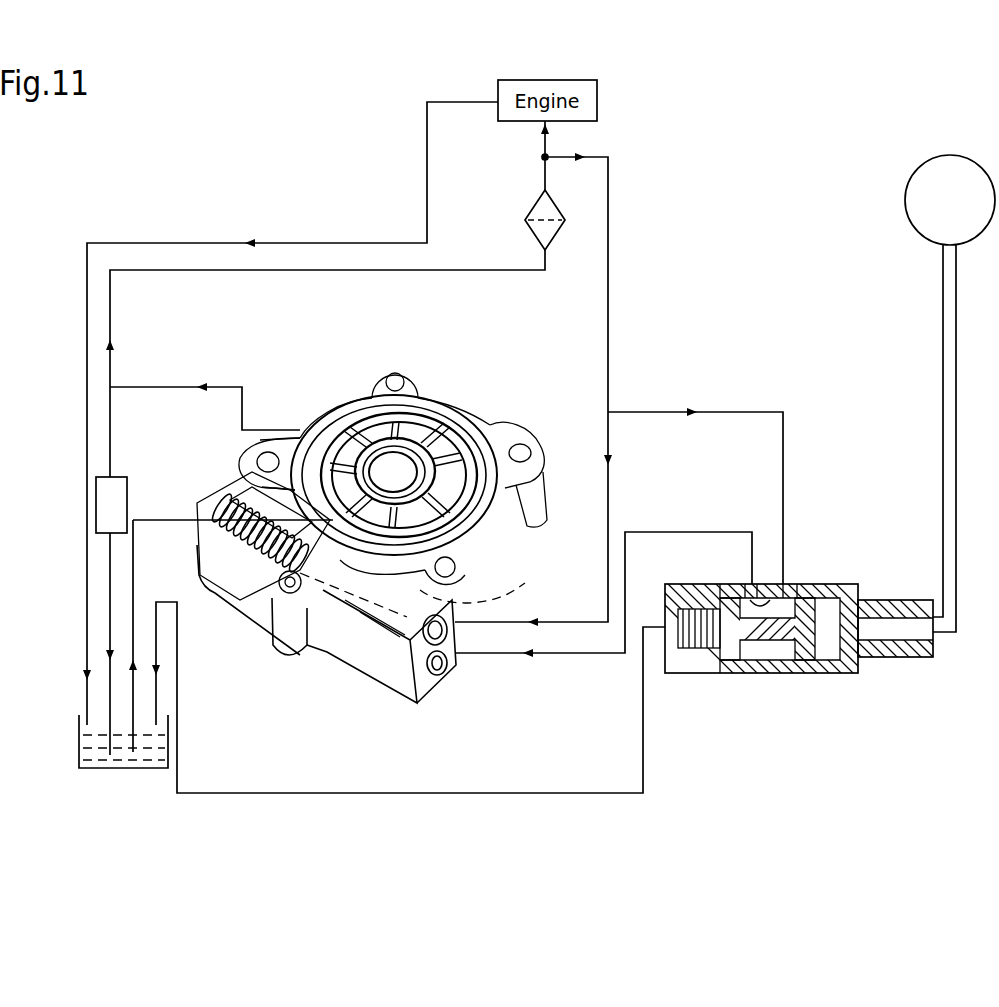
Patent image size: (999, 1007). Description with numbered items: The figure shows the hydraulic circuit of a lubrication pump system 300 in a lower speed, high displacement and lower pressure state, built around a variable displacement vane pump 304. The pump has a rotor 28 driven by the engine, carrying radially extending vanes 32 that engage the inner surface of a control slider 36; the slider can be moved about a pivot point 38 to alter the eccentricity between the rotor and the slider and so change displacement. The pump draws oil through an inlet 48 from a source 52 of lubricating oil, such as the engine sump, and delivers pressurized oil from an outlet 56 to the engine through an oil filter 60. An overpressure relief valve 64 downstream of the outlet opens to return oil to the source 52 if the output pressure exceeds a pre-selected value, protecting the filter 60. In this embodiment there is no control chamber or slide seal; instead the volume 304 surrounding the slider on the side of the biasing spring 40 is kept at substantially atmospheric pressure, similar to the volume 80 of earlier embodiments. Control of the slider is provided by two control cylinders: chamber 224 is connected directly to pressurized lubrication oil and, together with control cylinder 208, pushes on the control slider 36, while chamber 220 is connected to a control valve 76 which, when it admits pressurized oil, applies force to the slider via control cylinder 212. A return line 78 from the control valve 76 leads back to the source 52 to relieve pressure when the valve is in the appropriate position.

The lubrication pump system 300 is at (184, 193).
The oil filter 60 is at (528, 220).
The overpressure relief valve 64 is at (127, 488).
The source of lubricating oil 52 is at (79, 732).
The return line 78 is at (646, 718).
The control valve 76 is at (814, 586).
The volume 80 is at (337, 417).
The variable displacement vane pump 304 is at (362, 392).
The outlet 56 is at (435, 392).
The pivot point 38 is at (462, 392).
The vanes 32 is at (455, 440).
The rotor 28 is at (470, 537).
The control slider 36 is at (256, 470).
The inlet 48 is at (197, 506).
The biasing spring 40 is at (246, 562).
The control cylinder 208 is at (367, 600).
The control cylinder 212 is at (383, 637).
The chamber 220 is at (423, 683).
The chamber 224 is at (488, 607).